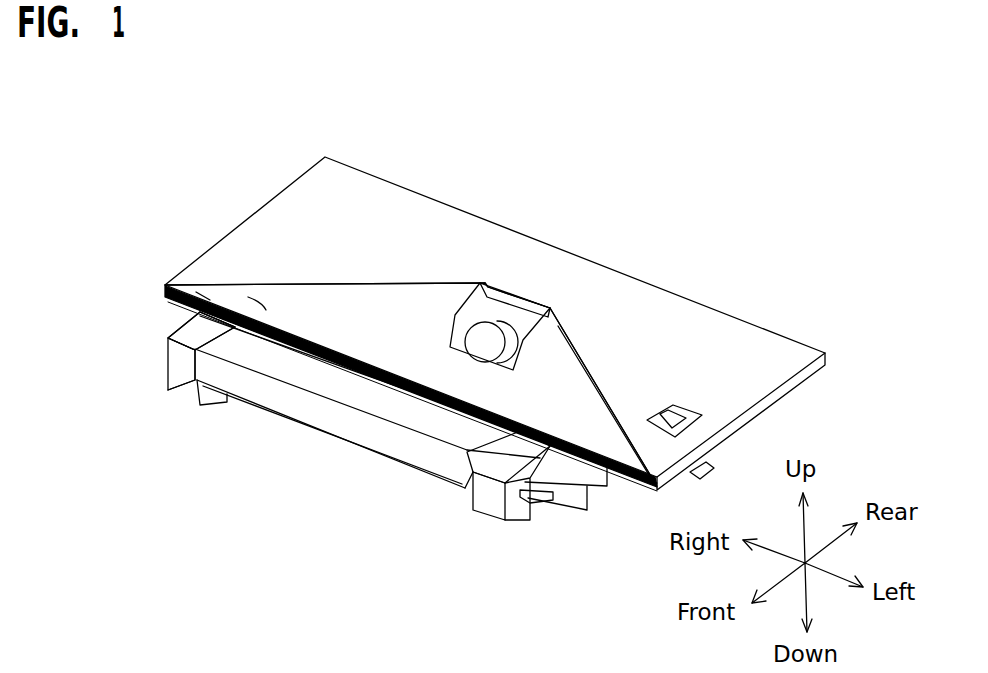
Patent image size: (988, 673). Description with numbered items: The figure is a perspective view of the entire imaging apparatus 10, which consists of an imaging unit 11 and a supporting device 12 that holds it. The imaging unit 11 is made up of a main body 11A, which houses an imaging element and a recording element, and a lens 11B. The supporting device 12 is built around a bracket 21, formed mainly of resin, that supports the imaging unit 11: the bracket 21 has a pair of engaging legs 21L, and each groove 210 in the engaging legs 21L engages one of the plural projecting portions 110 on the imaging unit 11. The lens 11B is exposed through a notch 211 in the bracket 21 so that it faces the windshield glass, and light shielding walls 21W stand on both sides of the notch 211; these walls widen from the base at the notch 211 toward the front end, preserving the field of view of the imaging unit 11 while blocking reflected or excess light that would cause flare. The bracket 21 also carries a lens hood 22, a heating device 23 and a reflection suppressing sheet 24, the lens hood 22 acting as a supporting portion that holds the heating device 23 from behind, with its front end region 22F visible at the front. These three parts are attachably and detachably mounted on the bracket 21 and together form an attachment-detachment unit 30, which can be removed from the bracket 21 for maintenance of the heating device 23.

The imaging apparatus 10 is at (760, 260).
The bracket 21 is at (400, 184).
The light shielding walls 21W is at (300, 287).
The engaging legs 21L is at (187, 383).
The notch 211 is at (487, 280).
The imaging unit 11 is at (354, 398).
The main body 11A is at (287, 417).
The lens 11B is at (527, 307).
The projecting portions 110 is at (540, 457).
The supporting device 12 is at (167, 348).
The attachment-detachment unit 30 is at (180, 205).
The reflection suppressing sheet 24 is at (263, 307).
The heating device 23 is at (202, 295).
The lens hood 22 is at (205, 322).
The front rail end 22F is at (617, 470).
The grooves 210 is at (535, 503).